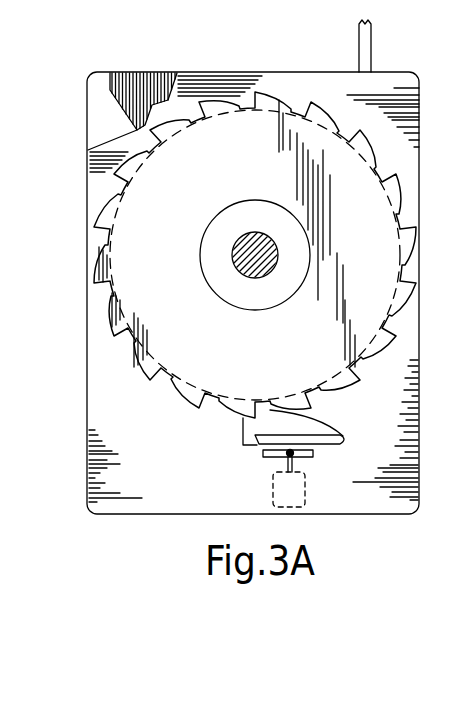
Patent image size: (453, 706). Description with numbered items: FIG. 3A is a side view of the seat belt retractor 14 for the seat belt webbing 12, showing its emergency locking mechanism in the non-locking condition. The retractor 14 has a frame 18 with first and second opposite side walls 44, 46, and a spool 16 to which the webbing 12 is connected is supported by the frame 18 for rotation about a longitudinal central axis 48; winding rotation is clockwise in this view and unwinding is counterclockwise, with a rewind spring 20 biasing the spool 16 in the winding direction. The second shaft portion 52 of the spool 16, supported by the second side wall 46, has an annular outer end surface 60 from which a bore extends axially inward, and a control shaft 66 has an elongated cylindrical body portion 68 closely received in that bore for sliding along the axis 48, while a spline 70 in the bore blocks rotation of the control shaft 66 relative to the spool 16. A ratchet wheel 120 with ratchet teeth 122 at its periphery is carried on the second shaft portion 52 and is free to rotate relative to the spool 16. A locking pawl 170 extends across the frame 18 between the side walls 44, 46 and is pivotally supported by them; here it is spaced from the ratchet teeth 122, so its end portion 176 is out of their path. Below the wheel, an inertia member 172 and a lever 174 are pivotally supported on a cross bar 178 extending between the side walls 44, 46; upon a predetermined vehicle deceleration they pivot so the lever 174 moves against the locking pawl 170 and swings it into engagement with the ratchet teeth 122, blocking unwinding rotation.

The seat belt webbing 12 is at (371, 43).
The seat belt retractor 14 is at (54, 57).
The spool 16 is at (102, 196).
The frame 18 is at (75, 80).
The rewind spring 20 is at (351, 36).
The first side wall 44 is at (115, 88).
The second side wall 46 is at (202, 77).
The longitudinal central axis 48 is at (232, 238).
The second shaft portion 52 is at (182, 240).
The annular outer end surface 60 is at (212, 262).
The control shaft 66 is at (220, 273).
The elongated cylindrical body portion 68 is at (247, 277).
The spline 70 is at (256, 231).
The ratchet wheel 120 is at (227, 72).
The ratchet teeth 122 is at (326, 95).
The locking pawl 170 is at (318, 440).
The inertia member 172 is at (280, 488).
The lever 174 is at (263, 467).
The end portion 176 is at (273, 444).
The cross bar 178 is at (302, 456).